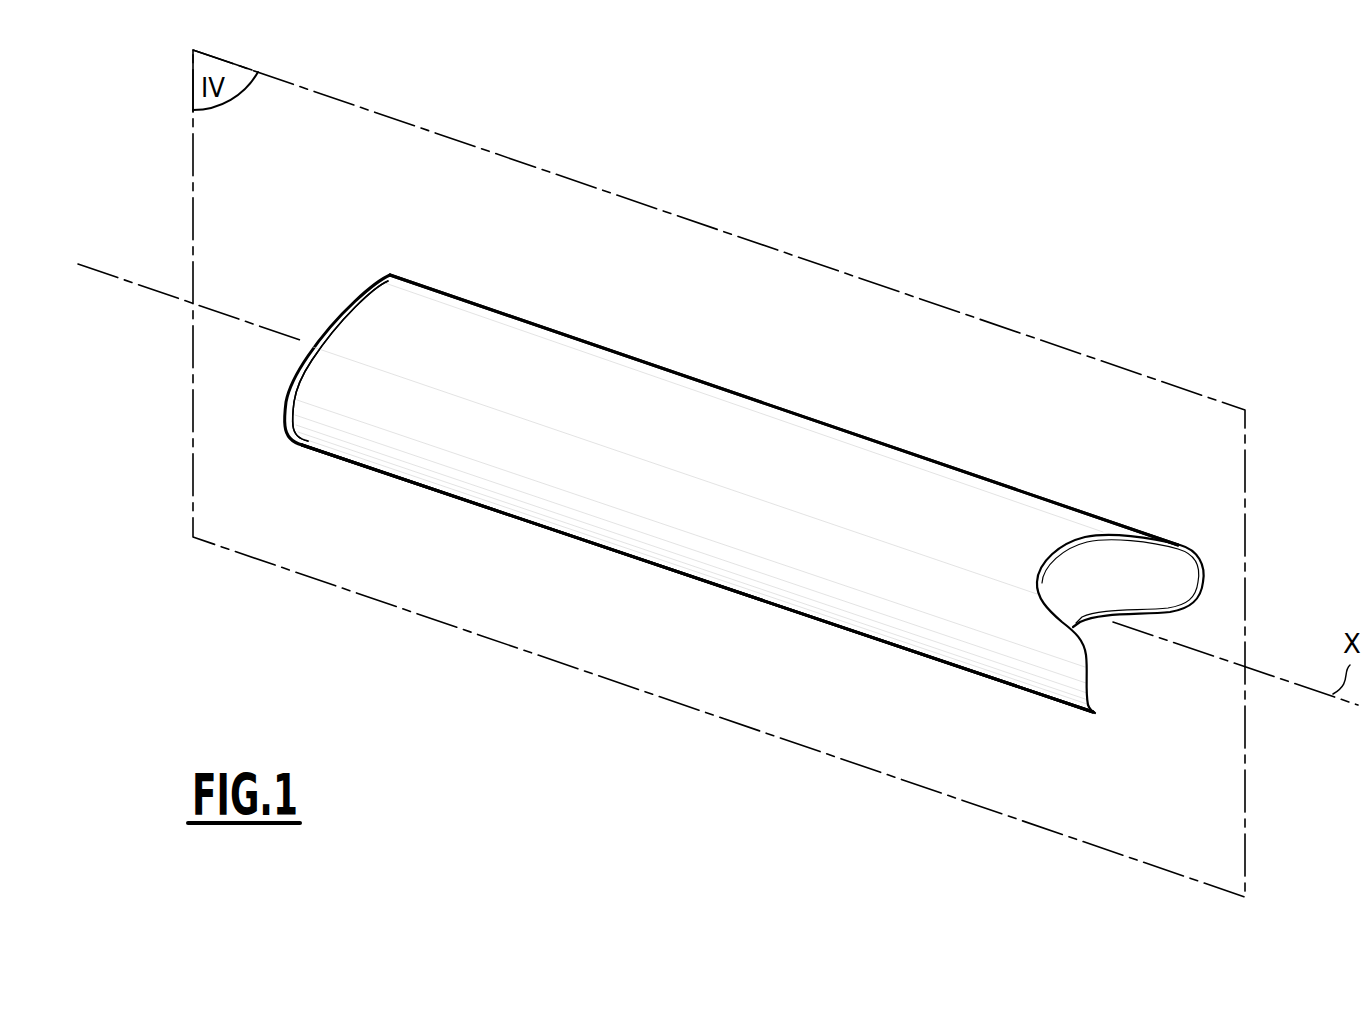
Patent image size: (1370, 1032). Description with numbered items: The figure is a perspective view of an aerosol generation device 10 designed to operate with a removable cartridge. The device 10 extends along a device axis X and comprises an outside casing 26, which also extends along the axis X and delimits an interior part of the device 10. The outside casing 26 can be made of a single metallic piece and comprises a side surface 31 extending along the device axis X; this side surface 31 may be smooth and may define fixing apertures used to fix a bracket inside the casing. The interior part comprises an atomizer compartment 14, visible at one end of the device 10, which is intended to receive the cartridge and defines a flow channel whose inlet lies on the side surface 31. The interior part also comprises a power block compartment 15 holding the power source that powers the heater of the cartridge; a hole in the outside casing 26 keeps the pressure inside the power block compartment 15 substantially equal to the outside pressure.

The aerosol generation device 10 is at (912, 203).
The atomizer compartment 14 is at (1118, 660).
The power block compartment 15 is at (560, 455).
The outside casing 26 is at (997, 537).
The side surface 31 is at (625, 483).